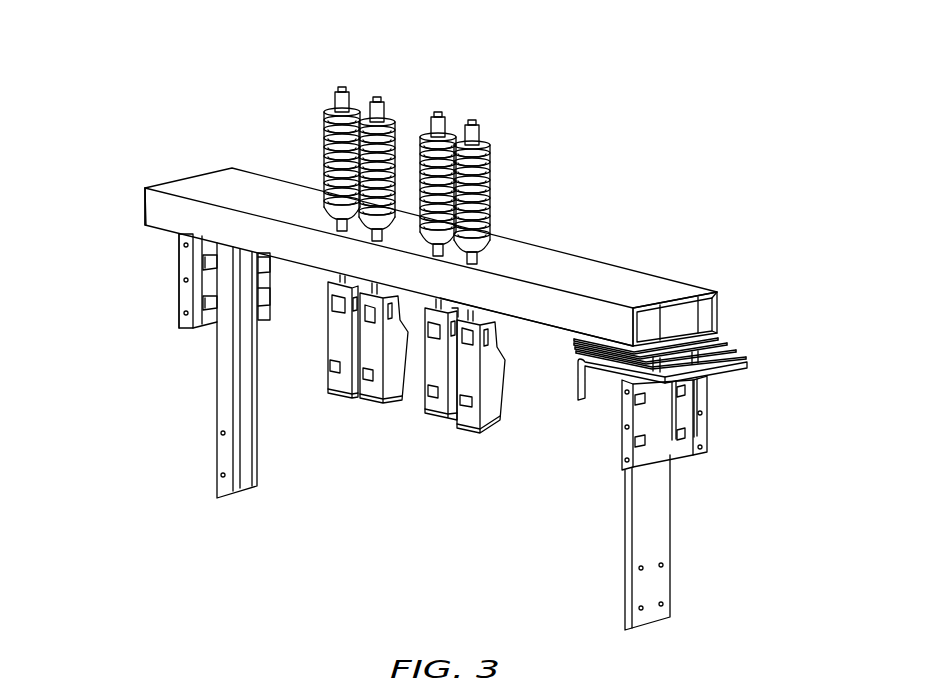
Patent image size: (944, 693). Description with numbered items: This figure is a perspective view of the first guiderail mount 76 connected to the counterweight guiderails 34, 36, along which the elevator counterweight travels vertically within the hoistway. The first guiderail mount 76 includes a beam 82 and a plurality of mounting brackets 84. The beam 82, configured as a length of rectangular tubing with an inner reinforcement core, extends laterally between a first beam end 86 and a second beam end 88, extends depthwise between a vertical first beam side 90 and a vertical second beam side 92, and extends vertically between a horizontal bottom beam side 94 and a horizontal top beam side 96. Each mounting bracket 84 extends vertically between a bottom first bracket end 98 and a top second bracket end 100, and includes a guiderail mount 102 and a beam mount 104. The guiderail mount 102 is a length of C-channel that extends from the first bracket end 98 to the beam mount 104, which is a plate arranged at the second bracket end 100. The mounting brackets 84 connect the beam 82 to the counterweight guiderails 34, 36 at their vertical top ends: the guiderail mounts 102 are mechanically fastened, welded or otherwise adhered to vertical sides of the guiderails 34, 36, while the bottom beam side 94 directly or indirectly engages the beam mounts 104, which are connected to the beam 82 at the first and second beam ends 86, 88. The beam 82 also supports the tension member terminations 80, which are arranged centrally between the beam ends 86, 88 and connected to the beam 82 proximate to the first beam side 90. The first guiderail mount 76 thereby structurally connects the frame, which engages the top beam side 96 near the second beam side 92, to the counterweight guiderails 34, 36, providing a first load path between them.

The counterweight guiderail 34 is at (655, 580).
The counterweight guiderail 36 is at (217, 470).
The first guiderail mount 76 is at (185, 173).
The tension member terminations 80 is at (320, 382).
The beam 82 is at (573, 263).
The mounting brackets 84 is at (177, 313).
The first beam end 86 is at (715, 317).
The second beam end 88 is at (143, 205).
The first beam side 90 is at (525, 321).
The second beam side 92 is at (660, 290).
The first beam side 94 is at (287, 263).
The second beam side 96 is at (297, 193).
The first bracket end 98 is at (186, 330).
The second bracket end 100 is at (578, 402).
The guiderail mount 102 is at (178, 262).
The beam mount 104 is at (736, 364).